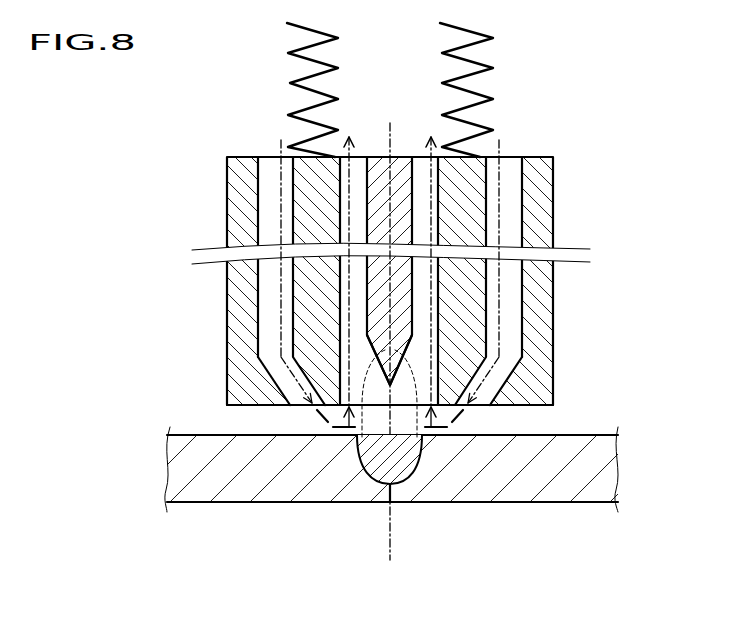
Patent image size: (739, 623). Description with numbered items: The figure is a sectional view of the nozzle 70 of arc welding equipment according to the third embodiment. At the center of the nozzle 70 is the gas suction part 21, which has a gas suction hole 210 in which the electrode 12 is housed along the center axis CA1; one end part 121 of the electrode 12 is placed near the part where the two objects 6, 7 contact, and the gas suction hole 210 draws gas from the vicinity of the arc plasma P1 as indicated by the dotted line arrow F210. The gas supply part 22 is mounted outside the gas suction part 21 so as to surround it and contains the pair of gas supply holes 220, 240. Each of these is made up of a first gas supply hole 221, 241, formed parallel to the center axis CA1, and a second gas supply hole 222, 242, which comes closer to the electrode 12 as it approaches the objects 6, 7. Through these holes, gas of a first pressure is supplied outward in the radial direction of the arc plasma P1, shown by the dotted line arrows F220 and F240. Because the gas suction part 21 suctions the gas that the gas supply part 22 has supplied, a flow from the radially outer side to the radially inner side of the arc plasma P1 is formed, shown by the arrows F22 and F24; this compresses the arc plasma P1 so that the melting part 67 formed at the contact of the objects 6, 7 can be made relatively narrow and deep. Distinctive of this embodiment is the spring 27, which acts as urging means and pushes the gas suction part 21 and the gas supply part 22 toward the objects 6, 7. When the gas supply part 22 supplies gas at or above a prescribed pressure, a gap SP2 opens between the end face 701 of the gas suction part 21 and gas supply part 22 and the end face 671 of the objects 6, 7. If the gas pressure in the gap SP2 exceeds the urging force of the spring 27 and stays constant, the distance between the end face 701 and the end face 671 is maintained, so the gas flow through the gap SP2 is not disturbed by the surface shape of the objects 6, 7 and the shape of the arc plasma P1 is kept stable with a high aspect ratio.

The nozzle 70 is at (556, 157).
The gas supply part 22 is at (253, 362).
The electrode 12 is at (401, 183).
The gas suction hole 210 is at (421, 352).
The one end part of the electrode 121 is at (380, 362).
The gas suction part 21 is at (447, 367).
The first gas supply hole 221 is at (266, 241).
The second gas supply hole 222 is at (290, 393).
The gas supply hole 240 is at (522, 297).
The second gas supply hole 242 is at (485, 393).
The gas supply hole 220 is at (257, 312).
The gas supply flow arrow F220 is at (283, 292).
The first gas supply hole 241 is at (508, 193).
The gas supply flow arrow F240 is at (500, 233).
The gas suction flow arrow F210 is at (335, 150).
The center axis CA1 is at (392, 553).
The spring 27 is at (290, 82).
The end face 701 is at (248, 406).
The gap SP2 is at (270, 420).
The gas flow arrow F22 is at (345, 430).
The gas flow arrow F24 is at (442, 432).
The object 6 is at (608, 472).
The object 7 is at (182, 487).
The end face of the objects 671 is at (312, 433).
The melting part 67 is at (382, 462).
The arc plasma P1 is at (362, 437).